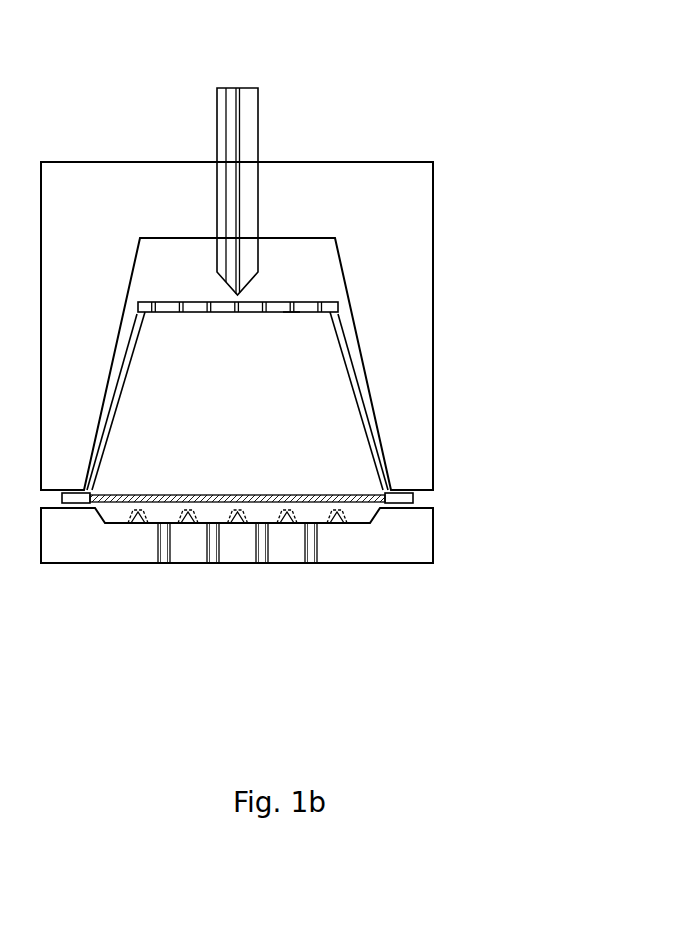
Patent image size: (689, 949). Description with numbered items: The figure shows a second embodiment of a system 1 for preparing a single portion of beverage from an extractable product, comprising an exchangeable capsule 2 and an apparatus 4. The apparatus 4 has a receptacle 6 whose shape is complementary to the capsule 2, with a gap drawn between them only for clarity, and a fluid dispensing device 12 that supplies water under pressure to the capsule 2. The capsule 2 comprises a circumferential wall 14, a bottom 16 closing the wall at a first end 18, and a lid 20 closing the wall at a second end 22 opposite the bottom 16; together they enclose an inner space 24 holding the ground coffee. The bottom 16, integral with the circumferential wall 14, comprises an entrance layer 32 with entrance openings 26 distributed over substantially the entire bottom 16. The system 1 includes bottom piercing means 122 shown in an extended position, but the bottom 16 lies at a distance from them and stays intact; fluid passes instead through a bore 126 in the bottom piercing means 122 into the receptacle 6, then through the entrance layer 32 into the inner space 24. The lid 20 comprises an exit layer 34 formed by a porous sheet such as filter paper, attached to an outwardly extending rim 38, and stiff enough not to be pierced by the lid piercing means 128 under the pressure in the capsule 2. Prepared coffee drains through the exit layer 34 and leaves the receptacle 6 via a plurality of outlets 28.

The system 1 is at (485, 555).
The exchangeable capsule 2 is at (370, 410).
The apparatus 4 is at (492, 180).
The receptacle 6 is at (433, 258).
The fluid dispensing device 12 is at (260, 95).
The circumferential wall 14 is at (368, 432).
The bottom 16 is at (309, 307).
The first end 18 is at (340, 310).
The lid 20 is at (352, 505).
The second end 22 is at (392, 490).
The inner space 24 is at (176, 402).
The entrance openings 26 is at (236, 300).
The outlets 28 is at (168, 563).
The entrance layer 32 is at (287, 318).
The exit layer 34 is at (316, 505).
The outwardly extending rim 38 is at (408, 500).
The bottom piercing means 122 is at (260, 133).
The bore 126 is at (233, 88).
The lid piercing means 128 is at (140, 523).